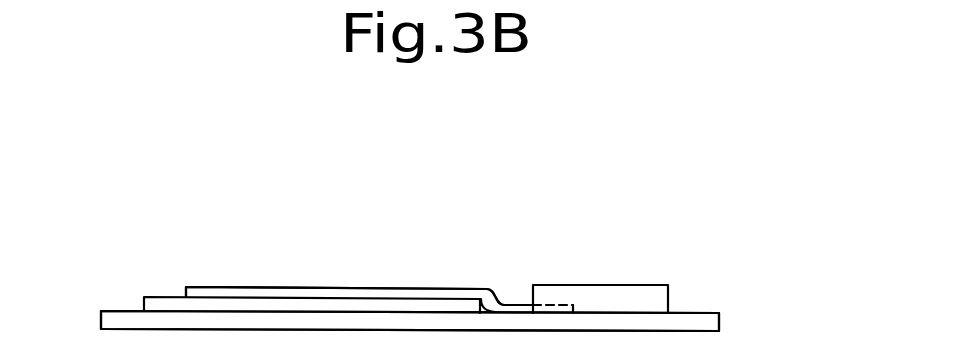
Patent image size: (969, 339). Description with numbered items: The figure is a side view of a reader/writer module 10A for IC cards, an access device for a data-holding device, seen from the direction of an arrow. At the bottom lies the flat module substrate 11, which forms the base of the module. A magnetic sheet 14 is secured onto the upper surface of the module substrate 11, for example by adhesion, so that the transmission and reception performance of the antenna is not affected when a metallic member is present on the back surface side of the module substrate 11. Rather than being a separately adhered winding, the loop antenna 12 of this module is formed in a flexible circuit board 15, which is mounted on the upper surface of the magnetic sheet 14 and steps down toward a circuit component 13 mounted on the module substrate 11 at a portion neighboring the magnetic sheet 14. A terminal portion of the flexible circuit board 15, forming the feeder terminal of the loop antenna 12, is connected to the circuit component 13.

The reader/writer module for IC cards 10A is at (685, 163).
The module substrate 11 is at (122, 310).
The loop antenna 12 is at (355, 291).
The circuit component 13 is at (598, 295).
The magnetic sheet 14 is at (173, 298).
The flexible circuit board 15 is at (359, 296).